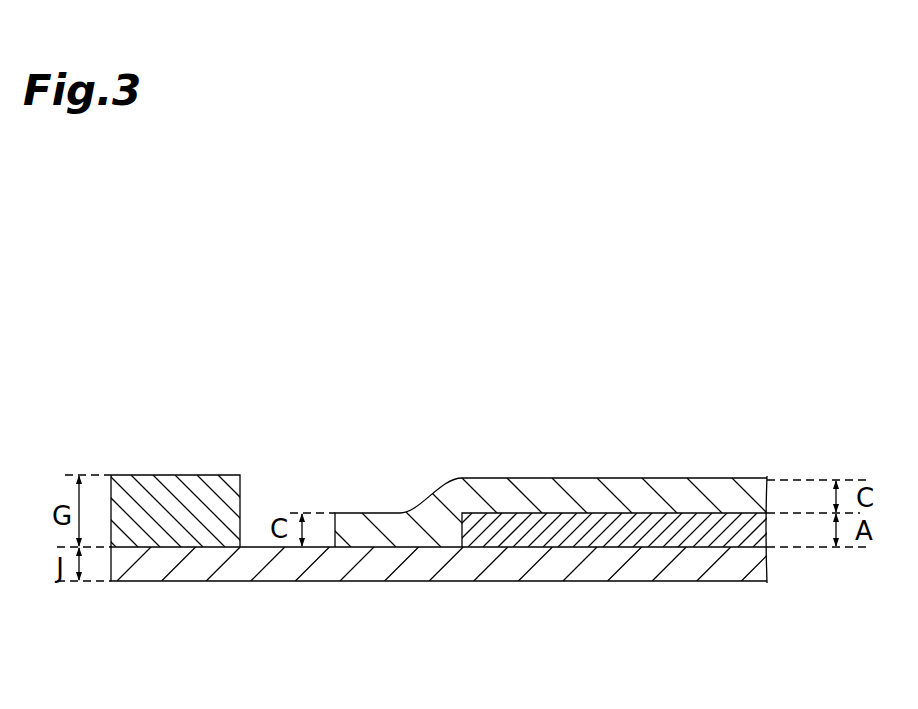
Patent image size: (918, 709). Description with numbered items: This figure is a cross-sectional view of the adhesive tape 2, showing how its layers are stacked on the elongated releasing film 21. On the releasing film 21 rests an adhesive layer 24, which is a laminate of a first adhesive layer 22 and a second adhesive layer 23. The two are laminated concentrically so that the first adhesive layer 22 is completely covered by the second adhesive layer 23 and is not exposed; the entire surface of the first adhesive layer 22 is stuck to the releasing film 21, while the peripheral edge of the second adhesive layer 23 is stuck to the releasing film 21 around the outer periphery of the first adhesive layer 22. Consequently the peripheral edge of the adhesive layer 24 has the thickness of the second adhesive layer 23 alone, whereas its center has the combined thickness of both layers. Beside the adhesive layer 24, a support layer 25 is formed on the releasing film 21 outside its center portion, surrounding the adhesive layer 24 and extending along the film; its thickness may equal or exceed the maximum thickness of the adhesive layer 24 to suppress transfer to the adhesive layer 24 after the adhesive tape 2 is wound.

The adhesive tape 2 is at (445, 493).
The releasing film 21 is at (343, 562).
The first adhesive layer 22 is at (645, 528).
The second adhesive layer 23 is at (560, 492).
The adhesive layer 24 is at (564, 430).
The support layer 25 is at (191, 498).